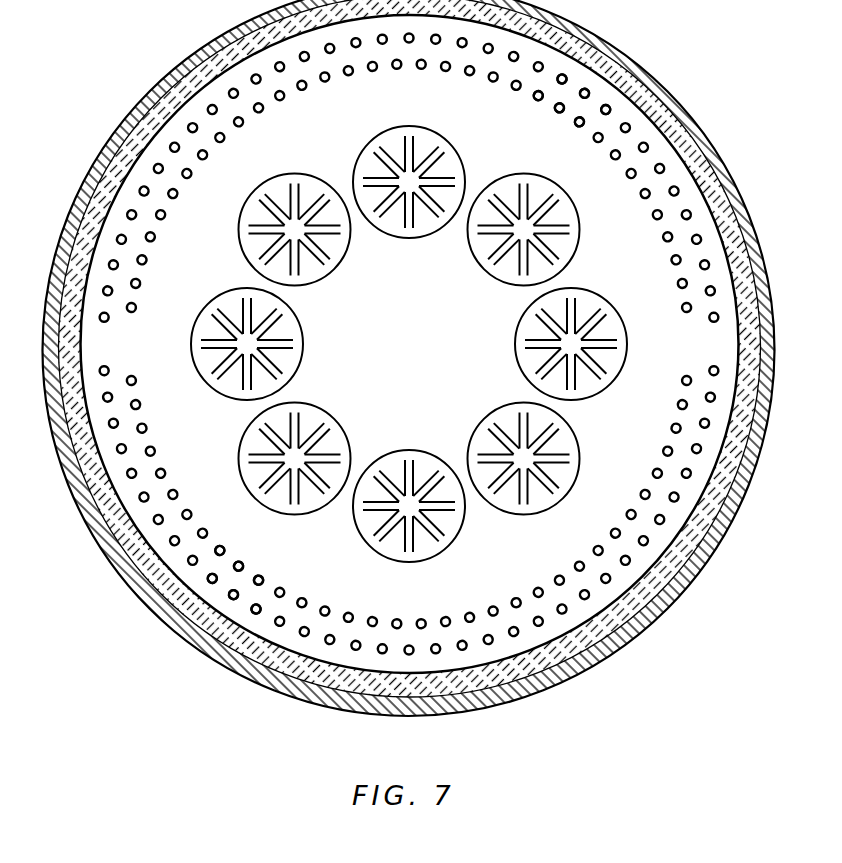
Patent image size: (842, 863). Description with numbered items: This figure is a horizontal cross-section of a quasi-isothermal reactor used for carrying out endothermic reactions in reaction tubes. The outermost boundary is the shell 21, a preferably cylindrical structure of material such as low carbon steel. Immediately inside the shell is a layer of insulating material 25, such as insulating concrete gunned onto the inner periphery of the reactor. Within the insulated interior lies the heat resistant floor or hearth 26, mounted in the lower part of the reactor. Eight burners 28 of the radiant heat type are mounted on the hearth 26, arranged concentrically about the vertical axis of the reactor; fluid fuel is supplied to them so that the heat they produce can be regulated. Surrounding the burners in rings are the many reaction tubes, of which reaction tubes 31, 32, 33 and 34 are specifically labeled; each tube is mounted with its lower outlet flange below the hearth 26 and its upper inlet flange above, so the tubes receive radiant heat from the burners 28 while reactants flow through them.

The shell 21 is at (688, 97).
The layer of insulating material 25 is at (693, 143).
The floor or hearth 26 is at (481, 578).
The burners 28 is at (402, 240).
The reaction tube 31 is at (250, 614).
The reaction tube 32 is at (228, 552).
The reaction tube 33 is at (568, 76).
The reaction tube 34 is at (579, 124).